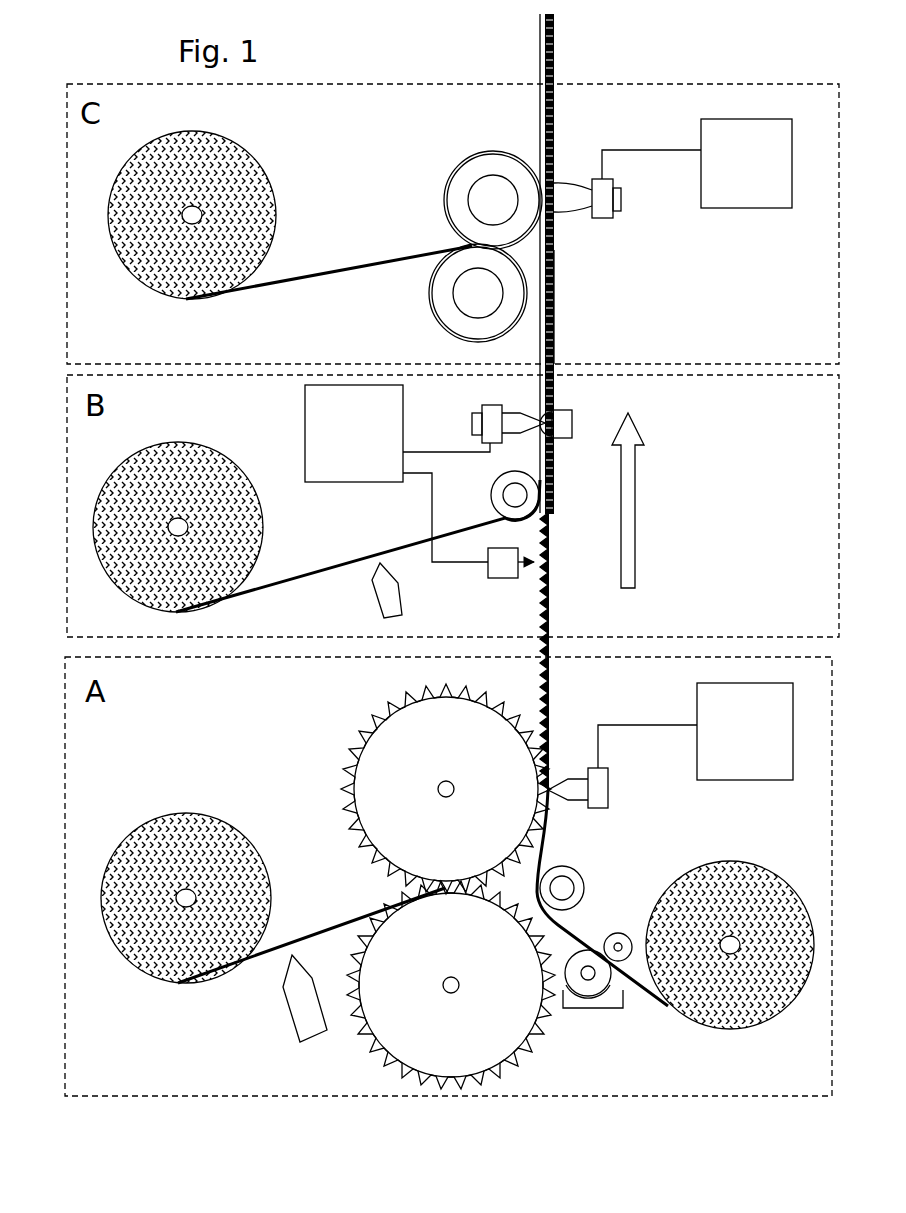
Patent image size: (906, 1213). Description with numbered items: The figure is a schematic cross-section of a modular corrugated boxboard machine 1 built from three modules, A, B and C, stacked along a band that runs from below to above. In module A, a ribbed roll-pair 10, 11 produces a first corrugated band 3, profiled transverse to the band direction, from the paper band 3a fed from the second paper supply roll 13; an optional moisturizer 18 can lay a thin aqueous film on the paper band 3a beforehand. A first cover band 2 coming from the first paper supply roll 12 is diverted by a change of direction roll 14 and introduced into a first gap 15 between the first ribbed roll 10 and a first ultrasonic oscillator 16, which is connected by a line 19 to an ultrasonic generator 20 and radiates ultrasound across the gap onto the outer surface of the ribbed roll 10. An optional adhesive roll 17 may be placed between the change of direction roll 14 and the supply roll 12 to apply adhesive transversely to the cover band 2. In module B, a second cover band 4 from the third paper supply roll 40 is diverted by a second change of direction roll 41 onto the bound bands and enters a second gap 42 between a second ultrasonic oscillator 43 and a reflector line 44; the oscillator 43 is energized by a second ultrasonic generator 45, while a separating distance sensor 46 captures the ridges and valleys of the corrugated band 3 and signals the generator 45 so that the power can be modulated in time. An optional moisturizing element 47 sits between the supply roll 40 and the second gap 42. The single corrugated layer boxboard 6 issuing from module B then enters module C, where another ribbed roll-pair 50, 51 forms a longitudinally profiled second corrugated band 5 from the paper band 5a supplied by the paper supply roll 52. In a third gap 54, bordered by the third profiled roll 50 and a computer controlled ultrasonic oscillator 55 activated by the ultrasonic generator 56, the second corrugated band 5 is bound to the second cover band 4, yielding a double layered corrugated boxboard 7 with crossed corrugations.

The modular corrugated boxboard machine 1 is at (438, 68).
The first cover band 2 is at (549, 692).
The first corrugated band 3 is at (540, 698).
The paper band 3a is at (322, 928).
The second cover band 4 is at (332, 582).
The second corrugated band 5 is at (540, 126).
The paper band 5a is at (318, 272).
The single corrugated layer boxboard 6 is at (555, 283).
The double layered corrugated boxboard 7 is at (556, 103).
The first ribbed roll 10 is at (368, 805).
The ribbed roll 11 is at (410, 1048).
The first paper supply roll 12 is at (745, 880).
The second paper supply roll 13 is at (160, 835).
The change of direction roll 14 is at (575, 892).
The first gap 15 is at (558, 768).
The first ultrasonic oscillator 16 is at (609, 800).
The adhesive roll 17 is at (596, 1022).
The moisturizer 18 is at (298, 1030).
The line 19 is at (647, 724).
The ultrasonic generator 20 is at (765, 705).
The third paper supply roll 40 is at (204, 460).
The second change of direction roll 41 is at (503, 493).
The second gap 42 is at (558, 399).
The second ultrasonic oscillator 43 is at (492, 423).
The reflector line 44 is at (562, 438).
The second ultrasonic generator 45 is at (365, 482).
The separating distance sensor 46 is at (505, 570).
The moisturizing element 47 is at (370, 598).
The third profiled roll 50 is at (473, 172).
The fourth profiled roll 51 is at (440, 300).
The paper supply roll 52 is at (253, 170).
The third gap 54 is at (565, 170).
The computer controlled ultrasonic oscillator 55 is at (601, 218).
The ultrasonic generator 56 is at (751, 187).